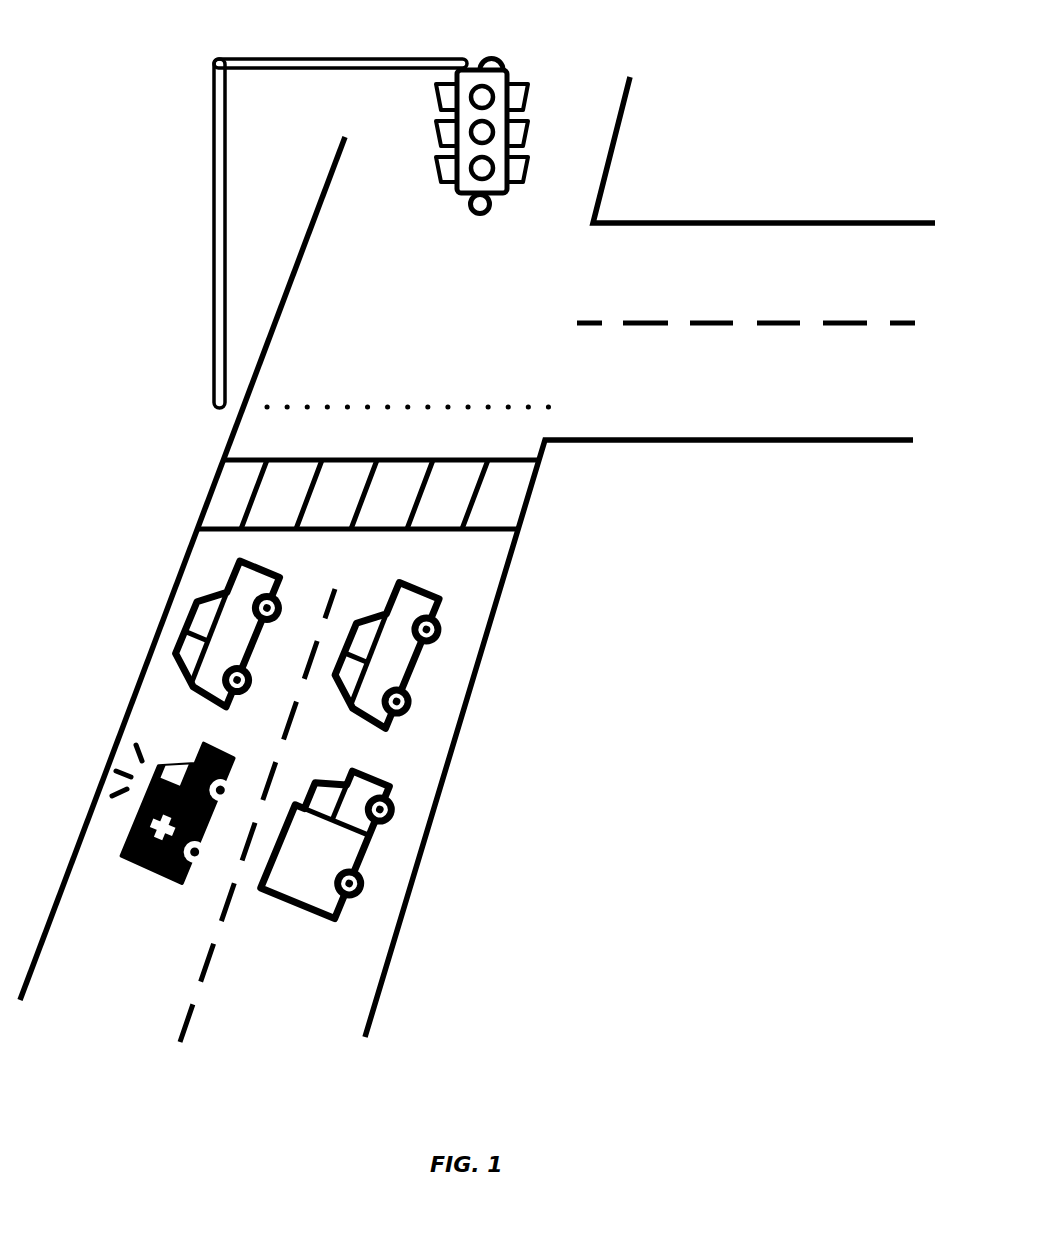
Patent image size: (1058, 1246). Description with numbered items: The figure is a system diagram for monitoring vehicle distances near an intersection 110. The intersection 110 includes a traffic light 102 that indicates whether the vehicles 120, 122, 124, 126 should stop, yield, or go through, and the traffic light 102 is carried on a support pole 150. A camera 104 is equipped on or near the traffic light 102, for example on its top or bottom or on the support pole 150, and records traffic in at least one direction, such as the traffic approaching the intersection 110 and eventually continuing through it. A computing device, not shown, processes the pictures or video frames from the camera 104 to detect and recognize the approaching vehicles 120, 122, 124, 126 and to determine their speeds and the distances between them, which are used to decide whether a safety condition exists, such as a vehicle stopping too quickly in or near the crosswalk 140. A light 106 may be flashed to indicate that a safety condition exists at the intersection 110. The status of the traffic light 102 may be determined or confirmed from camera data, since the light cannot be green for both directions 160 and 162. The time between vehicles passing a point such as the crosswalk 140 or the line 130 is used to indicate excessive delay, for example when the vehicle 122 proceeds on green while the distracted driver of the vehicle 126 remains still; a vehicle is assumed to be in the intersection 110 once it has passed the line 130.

The traffic light 102 is at (528, 127).
The camera 104 is at (503, 66).
The light 106 is at (490, 206).
The intersection 110 is at (405, 338).
The vehicle 120 is at (283, 581).
The vehicle 122 is at (437, 590).
The vehicle 124 is at (232, 757).
The vehicle 126 is at (388, 790).
The line 130 is at (570, 407).
The crosswalk 140 is at (200, 497).
The support pole 150 is at (212, 82).
The direction 160 is at (485, 655).
The direction 162 is at (785, 213).